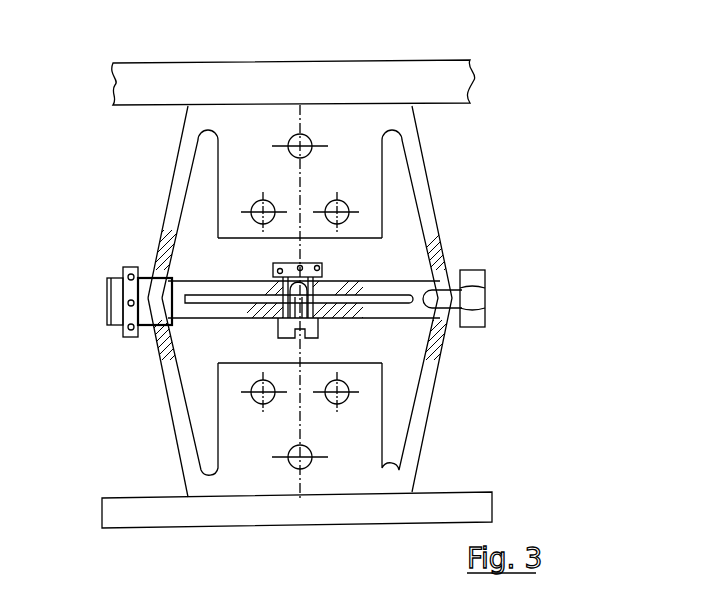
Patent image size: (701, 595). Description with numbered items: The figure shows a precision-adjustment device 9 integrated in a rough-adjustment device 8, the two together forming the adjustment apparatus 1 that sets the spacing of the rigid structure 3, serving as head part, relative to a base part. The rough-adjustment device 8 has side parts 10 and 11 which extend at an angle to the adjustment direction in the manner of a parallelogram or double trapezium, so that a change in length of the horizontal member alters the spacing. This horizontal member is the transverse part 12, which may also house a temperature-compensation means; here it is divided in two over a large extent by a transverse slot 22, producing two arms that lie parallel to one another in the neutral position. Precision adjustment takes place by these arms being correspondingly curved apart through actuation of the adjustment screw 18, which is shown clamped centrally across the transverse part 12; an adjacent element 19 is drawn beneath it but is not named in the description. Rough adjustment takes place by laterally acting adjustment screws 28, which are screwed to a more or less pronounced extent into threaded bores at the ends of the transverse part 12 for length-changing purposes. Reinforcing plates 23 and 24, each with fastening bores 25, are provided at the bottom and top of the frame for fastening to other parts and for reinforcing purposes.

The adjustment apparatus 1 is at (458, 340).
The structure 3 is at (187, 84).
The rough-adjustment device 8 is at (142, 360).
The precision-adjustment device 9 is at (228, 268).
The side part 10 is at (430, 176).
The side part 11 is at (163, 203).
The transverse part 12 is at (180, 373).
The adjustment screw 18 is at (322, 263).
The lower clamp block 19 is at (310, 328).
The transverse slot 22 is at (153, 268).
The reinforcing plate 23 is at (355, 432).
The reinforcing plate 24 is at (354, 170).
The fastening bore 25 is at (303, 140).
The adjustment screw 28 is at (483, 272).